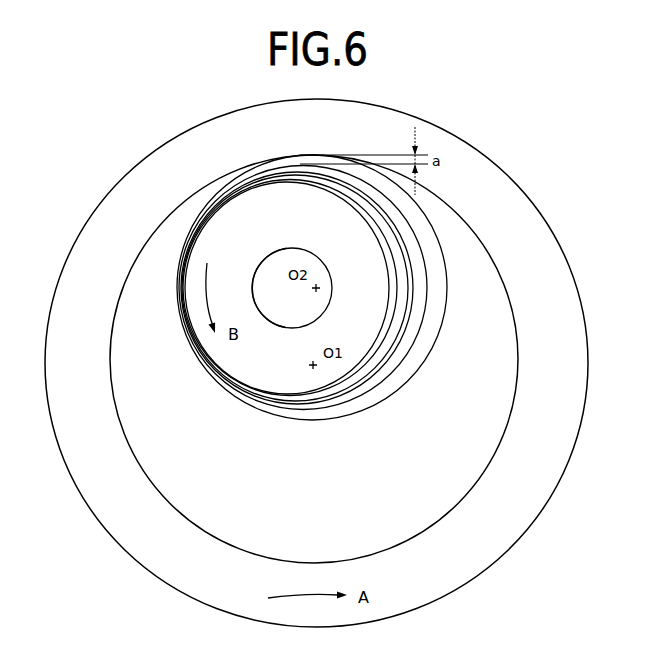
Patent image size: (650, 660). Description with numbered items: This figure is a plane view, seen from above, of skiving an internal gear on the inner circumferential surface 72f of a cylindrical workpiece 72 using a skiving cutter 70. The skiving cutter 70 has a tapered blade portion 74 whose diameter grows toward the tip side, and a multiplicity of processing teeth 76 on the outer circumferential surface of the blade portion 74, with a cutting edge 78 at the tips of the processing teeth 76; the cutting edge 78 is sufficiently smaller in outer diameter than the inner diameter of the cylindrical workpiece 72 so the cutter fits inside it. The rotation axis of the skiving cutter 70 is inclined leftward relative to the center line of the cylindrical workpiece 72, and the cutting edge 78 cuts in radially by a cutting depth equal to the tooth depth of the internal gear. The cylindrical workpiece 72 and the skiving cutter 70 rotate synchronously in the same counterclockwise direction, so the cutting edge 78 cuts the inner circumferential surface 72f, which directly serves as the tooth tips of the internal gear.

The skiving cutter 70 is at (211, 399).
The cylindrical workpiece 72 is at (528, 492).
The inner circumferential surface 72f is at (217, 535).
The blade portion 74 is at (369, 432).
The processing teeth 76 is at (441, 312).
The cutting edge 78 is at (418, 368).